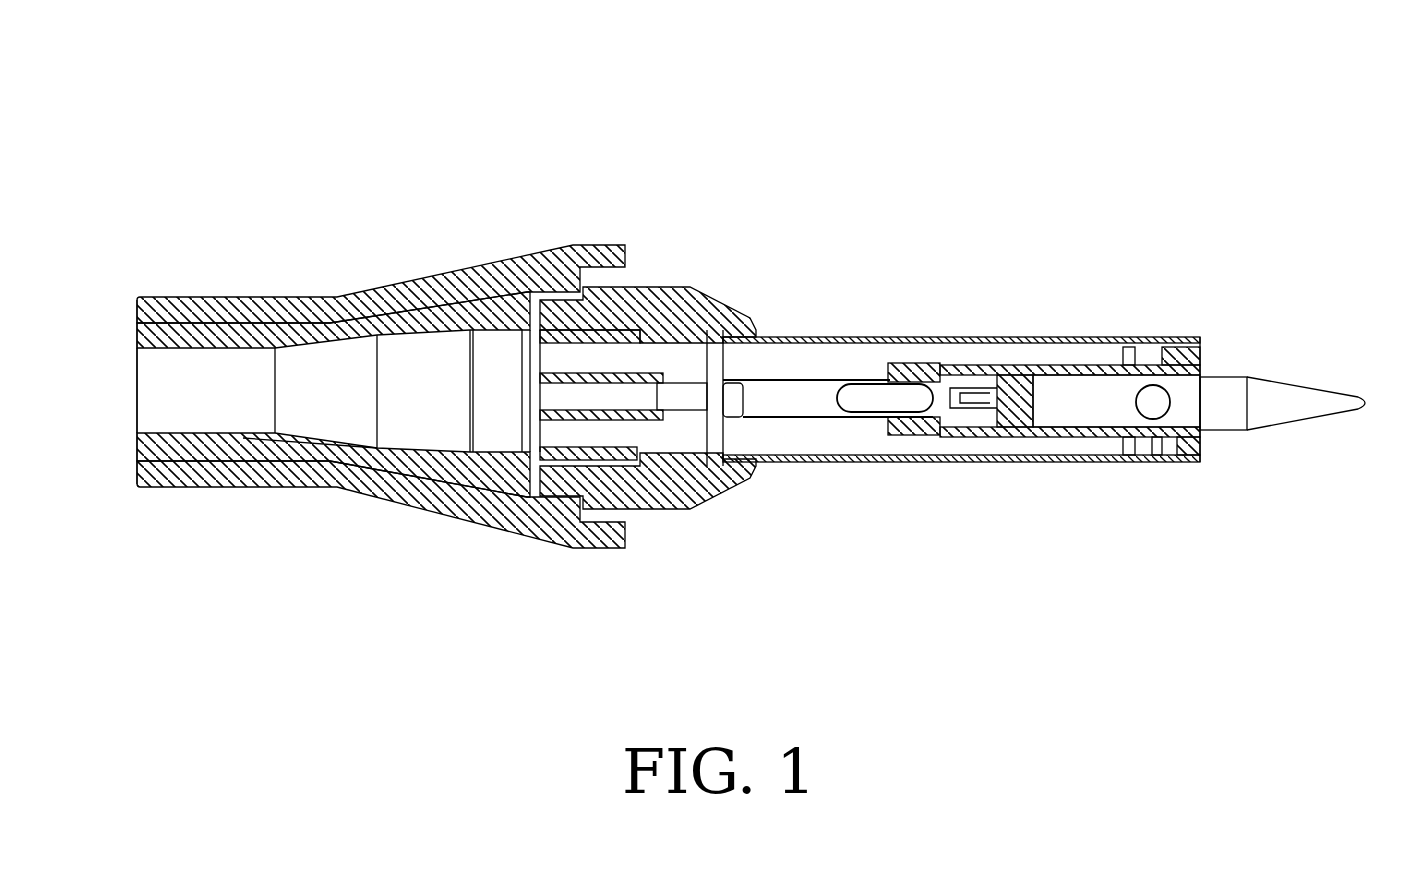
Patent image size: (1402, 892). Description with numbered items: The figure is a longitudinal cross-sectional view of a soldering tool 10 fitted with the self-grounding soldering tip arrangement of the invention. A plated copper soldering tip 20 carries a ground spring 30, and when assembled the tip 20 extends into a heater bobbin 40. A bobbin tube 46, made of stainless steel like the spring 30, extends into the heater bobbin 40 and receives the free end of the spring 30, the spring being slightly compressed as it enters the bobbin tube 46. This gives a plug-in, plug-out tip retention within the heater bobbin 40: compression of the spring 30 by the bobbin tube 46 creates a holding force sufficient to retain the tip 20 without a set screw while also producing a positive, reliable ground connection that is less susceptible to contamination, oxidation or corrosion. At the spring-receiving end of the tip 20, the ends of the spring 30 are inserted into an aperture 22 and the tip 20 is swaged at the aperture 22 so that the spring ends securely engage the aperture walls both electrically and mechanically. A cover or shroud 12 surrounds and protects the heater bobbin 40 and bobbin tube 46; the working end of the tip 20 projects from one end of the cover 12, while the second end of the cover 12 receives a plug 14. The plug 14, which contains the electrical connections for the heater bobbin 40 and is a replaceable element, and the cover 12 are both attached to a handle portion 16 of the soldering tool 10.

The soldering tool 10 is at (338, 112).
The cover 12 is at (798, 463).
The plug 14 is at (508, 527).
The handle portion 16 is at (488, 264).
The soldering tip 20 is at (1282, 349).
The aperture 22 is at (937, 487).
The ground spring 30 is at (911, 291).
The heater bobbin 40 is at (1070, 490).
The bobbin tube 46 is at (736, 329).